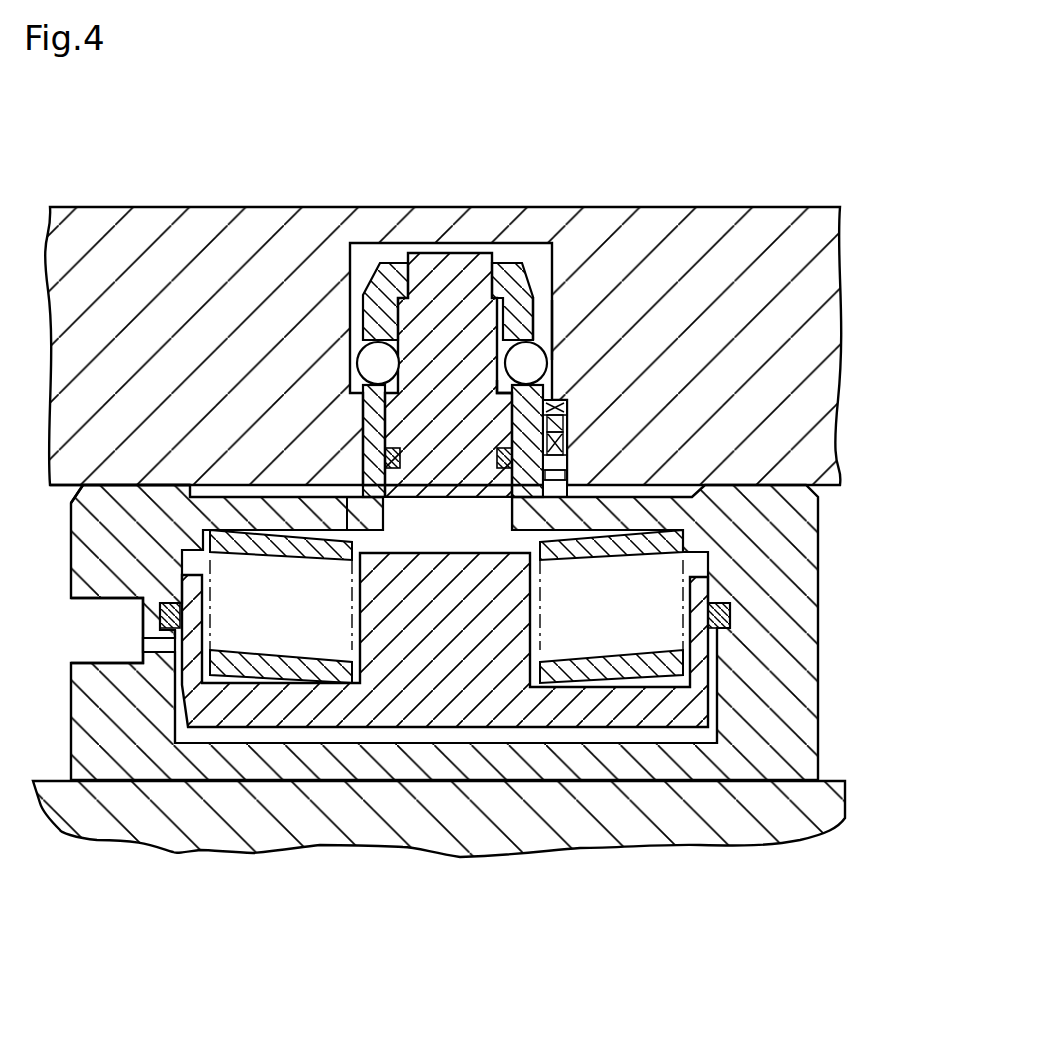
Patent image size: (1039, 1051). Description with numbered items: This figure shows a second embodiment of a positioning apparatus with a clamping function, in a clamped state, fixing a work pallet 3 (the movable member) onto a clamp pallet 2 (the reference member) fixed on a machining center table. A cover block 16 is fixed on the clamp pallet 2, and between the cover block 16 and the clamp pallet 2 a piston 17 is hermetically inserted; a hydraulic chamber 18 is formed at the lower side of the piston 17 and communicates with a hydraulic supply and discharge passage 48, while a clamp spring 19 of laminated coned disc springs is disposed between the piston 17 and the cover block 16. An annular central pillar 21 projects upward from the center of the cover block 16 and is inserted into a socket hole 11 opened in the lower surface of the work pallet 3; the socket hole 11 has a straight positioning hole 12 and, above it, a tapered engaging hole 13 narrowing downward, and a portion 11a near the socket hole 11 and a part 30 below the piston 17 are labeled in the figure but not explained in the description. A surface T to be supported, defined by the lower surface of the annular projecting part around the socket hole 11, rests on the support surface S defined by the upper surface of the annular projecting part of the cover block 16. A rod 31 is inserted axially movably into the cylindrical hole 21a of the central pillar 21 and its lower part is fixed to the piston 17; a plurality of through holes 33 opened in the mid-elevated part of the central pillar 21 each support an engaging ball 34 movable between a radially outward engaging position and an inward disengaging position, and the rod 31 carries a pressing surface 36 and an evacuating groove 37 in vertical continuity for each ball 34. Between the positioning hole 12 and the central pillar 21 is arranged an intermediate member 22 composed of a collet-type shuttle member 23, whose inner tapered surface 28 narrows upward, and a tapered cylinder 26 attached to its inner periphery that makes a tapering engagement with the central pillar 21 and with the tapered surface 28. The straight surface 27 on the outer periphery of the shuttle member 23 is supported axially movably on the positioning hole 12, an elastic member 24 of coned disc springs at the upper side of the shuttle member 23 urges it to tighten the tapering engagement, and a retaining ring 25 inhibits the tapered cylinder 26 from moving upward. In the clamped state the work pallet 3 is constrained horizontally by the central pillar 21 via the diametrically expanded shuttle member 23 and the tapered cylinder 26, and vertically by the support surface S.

The clamp pallet 2 is at (681, 847).
The work pallet 3 is at (722, 207).
The socket hole 11 is at (538, 257).
The cylindrical hole 11a is at (494, 243).
The positioning hole 12 is at (595, 481).
The tapered engaging hole 13 is at (553, 352).
The cover block 16 is at (820, 680).
The piston 17 is at (370, 718).
The hydraulic chamber 18 is at (282, 735).
The clamp spring 19 is at (248, 665).
The central pillar 21 is at (392, 255).
The cylindrical hole 21a is at (389, 500).
The intermediate member 22 is at (649, 481).
The shuttle member 23 is at (568, 418).
The elastic member 24 is at (572, 424).
The retaining ring 25 is at (562, 482).
The tapered cylinder 26 is at (567, 448).
The straight surface 27 is at (567, 468).
The tapered surface 28 is at (511, 485).
The base plate 30 is at (466, 762).
The rod 31 is at (445, 253).
The through hole 33 is at (548, 340).
The engaging ball 34 is at (628, 316).
The pressing surface 36 is at (504, 362).
The evacuating groove 37 is at (493, 400).
The hydraulic supply and discharge passage 48 is at (99, 655).
The support surface S is at (172, 484).
The surface to be supported T is at (141, 496).